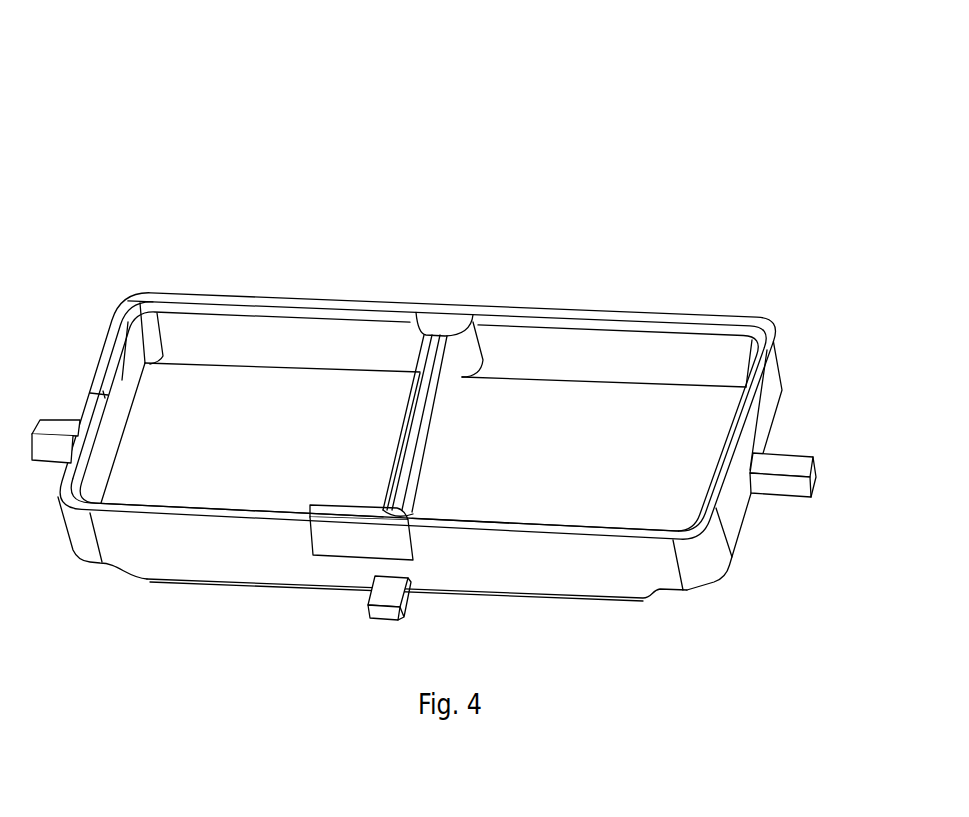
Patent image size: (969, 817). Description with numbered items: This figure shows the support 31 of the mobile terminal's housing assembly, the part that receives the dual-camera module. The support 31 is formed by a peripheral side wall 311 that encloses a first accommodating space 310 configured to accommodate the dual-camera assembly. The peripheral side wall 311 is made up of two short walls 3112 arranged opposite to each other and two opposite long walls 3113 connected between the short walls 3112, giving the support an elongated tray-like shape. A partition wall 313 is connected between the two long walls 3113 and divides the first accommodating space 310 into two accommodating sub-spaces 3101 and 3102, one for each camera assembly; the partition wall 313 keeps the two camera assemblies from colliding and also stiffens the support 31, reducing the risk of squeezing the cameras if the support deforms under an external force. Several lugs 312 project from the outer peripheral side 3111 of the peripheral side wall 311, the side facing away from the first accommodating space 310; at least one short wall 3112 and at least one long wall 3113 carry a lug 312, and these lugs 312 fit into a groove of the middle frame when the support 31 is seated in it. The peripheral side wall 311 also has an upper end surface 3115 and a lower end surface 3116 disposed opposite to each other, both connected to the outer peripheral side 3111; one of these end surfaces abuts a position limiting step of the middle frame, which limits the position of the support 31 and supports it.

The support 31 is at (449, 338).
The first accommodating space 310 is at (733, 218).
The accommodating sub-space 3101 is at (363, 383).
The accommodating sub-space 3102 is at (610, 417).
The peripheral side wall 311 is at (378, 228).
The outer peripheral side 3111 is at (765, 410).
The short wall 3112 is at (140, 293).
The long wall 3113 is at (277, 347).
The upper end surface 3115 is at (182, 510).
The lower end surface 3116 is at (215, 587).
The lug 312 is at (785, 475).
The partition wall 313 is at (440, 403).